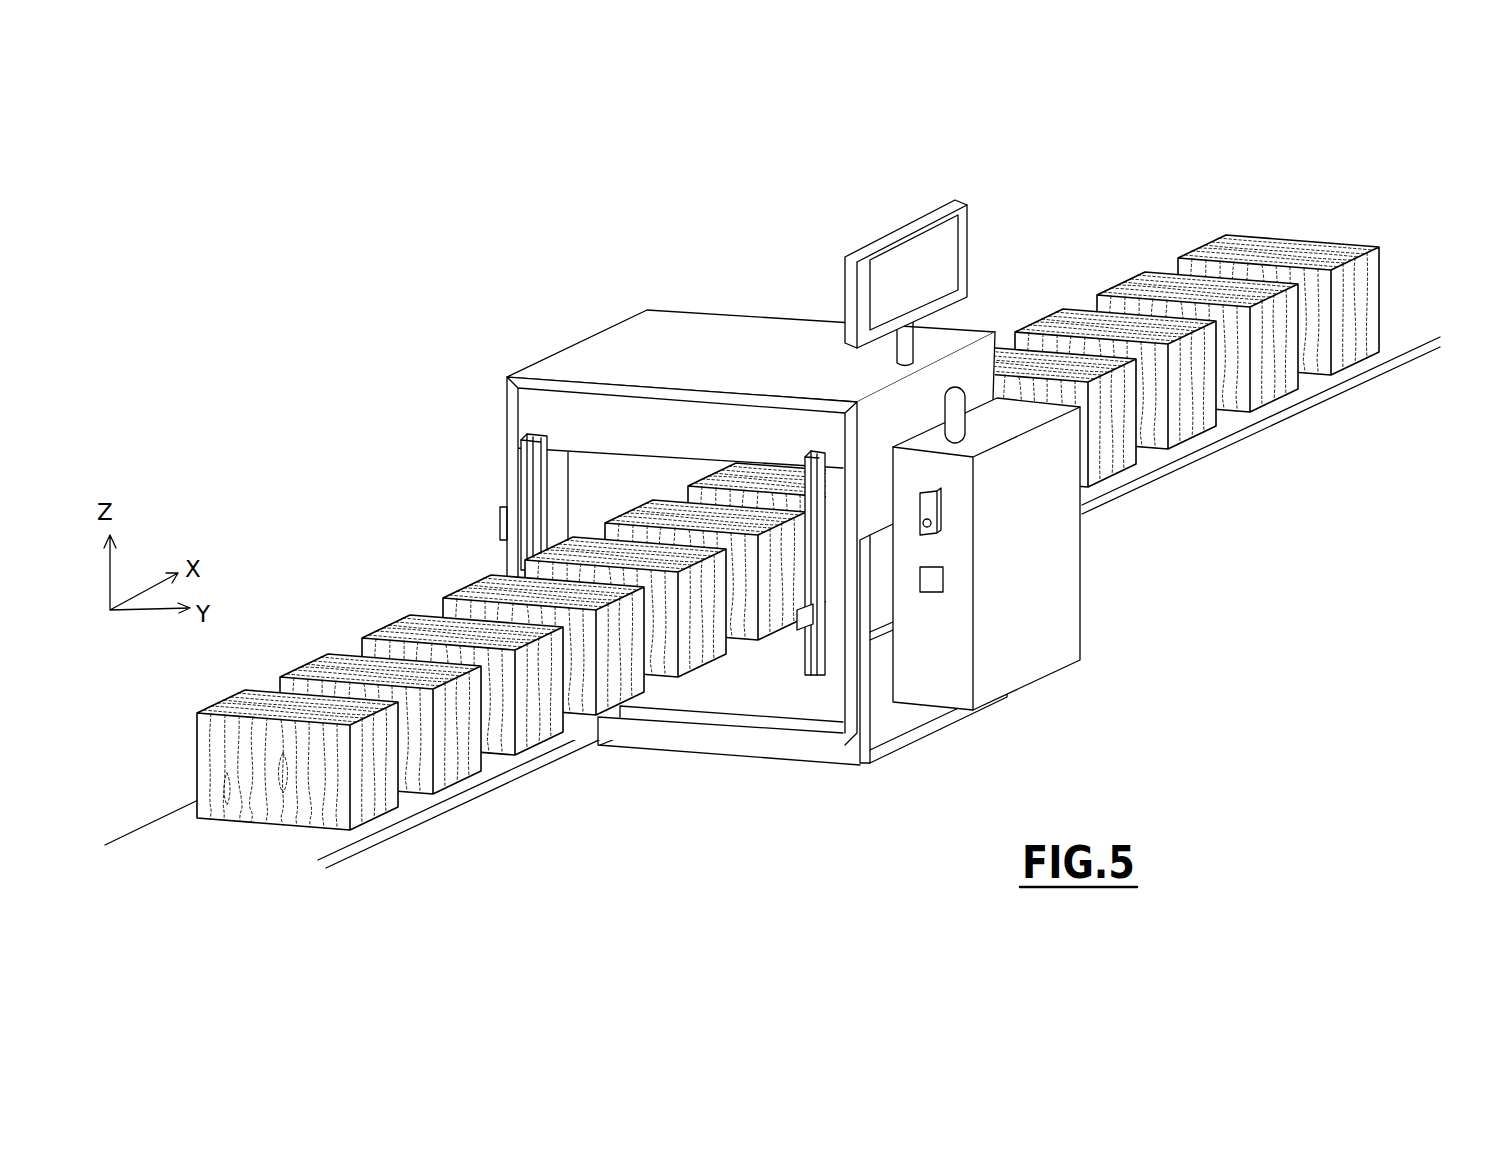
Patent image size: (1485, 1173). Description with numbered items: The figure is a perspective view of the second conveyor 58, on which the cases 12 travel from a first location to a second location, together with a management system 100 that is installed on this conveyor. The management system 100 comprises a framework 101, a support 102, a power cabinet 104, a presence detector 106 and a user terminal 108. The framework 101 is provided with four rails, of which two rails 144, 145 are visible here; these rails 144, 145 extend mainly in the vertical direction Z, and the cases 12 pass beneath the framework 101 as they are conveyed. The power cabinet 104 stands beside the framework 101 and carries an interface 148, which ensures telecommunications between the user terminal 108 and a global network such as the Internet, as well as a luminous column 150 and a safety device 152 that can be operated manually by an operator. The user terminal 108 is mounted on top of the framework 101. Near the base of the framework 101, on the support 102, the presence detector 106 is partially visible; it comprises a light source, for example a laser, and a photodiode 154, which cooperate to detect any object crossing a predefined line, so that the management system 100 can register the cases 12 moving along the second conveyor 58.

The management system 100 is at (540, 288).
The framework 101 is at (688, 333).
The user terminal 108 is at (910, 250).
The case 12 is at (1305, 252).
The second conveyor 58 is at (1395, 343).
The rail 145 is at (812, 455).
The rail 144 is at (530, 488).
The luminous column 150 is at (962, 430).
The interface 148 is at (937, 515).
The safety device 152 is at (945, 578).
The power cabinet 104 is at (1070, 575).
The photodiode 154 is at (768, 667).
The presence detector 106 is at (803, 663).
The support 102 is at (810, 765).